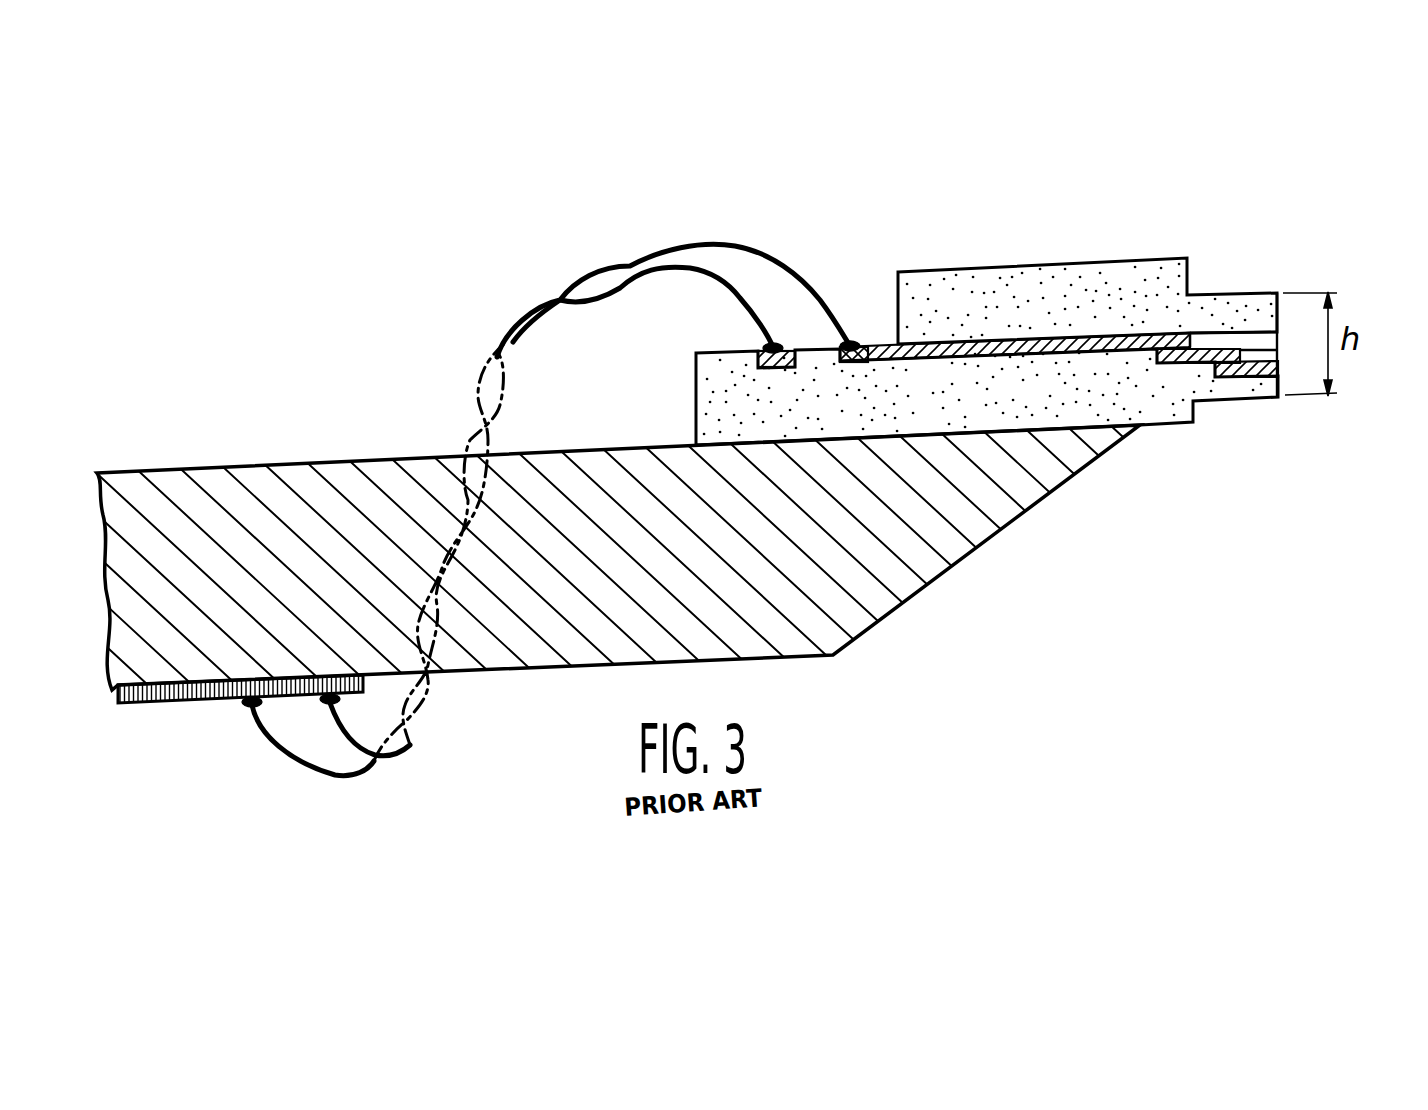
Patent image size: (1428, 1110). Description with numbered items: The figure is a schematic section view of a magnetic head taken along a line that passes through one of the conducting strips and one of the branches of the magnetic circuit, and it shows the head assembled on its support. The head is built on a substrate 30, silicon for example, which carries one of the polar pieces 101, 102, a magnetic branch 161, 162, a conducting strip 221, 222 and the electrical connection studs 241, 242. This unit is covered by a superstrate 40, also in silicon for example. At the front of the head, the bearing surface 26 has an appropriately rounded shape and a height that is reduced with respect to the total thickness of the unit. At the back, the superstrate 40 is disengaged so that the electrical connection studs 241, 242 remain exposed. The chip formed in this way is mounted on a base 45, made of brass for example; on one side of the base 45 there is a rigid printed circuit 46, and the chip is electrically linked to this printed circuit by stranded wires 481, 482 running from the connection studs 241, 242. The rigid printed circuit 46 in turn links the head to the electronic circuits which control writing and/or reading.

The base 45 is at (973, 525).
The rigid printed circuit 46 is at (162, 706).
The substrate 30 is at (694, 400).
The superstrate 40 is at (1133, 272).
The conducting strip 221 is at (1015, 278).
The conducting strip 222 is at (957, 348).
The bearing surface 26 is at (1279, 310).
The magnetic branch 161 is at (1245, 288).
The magnetic branch 162 is at (1217, 350).
The polar piece 101 is at (1282, 429).
The polar piece 102 is at (1250, 380).
The electrical connection stud 241 is at (890, 340).
The electrical connection stud 242 is at (755, 350).
The stranded wire 481 is at (765, 253).
The stranded wire 482 is at (611, 262).